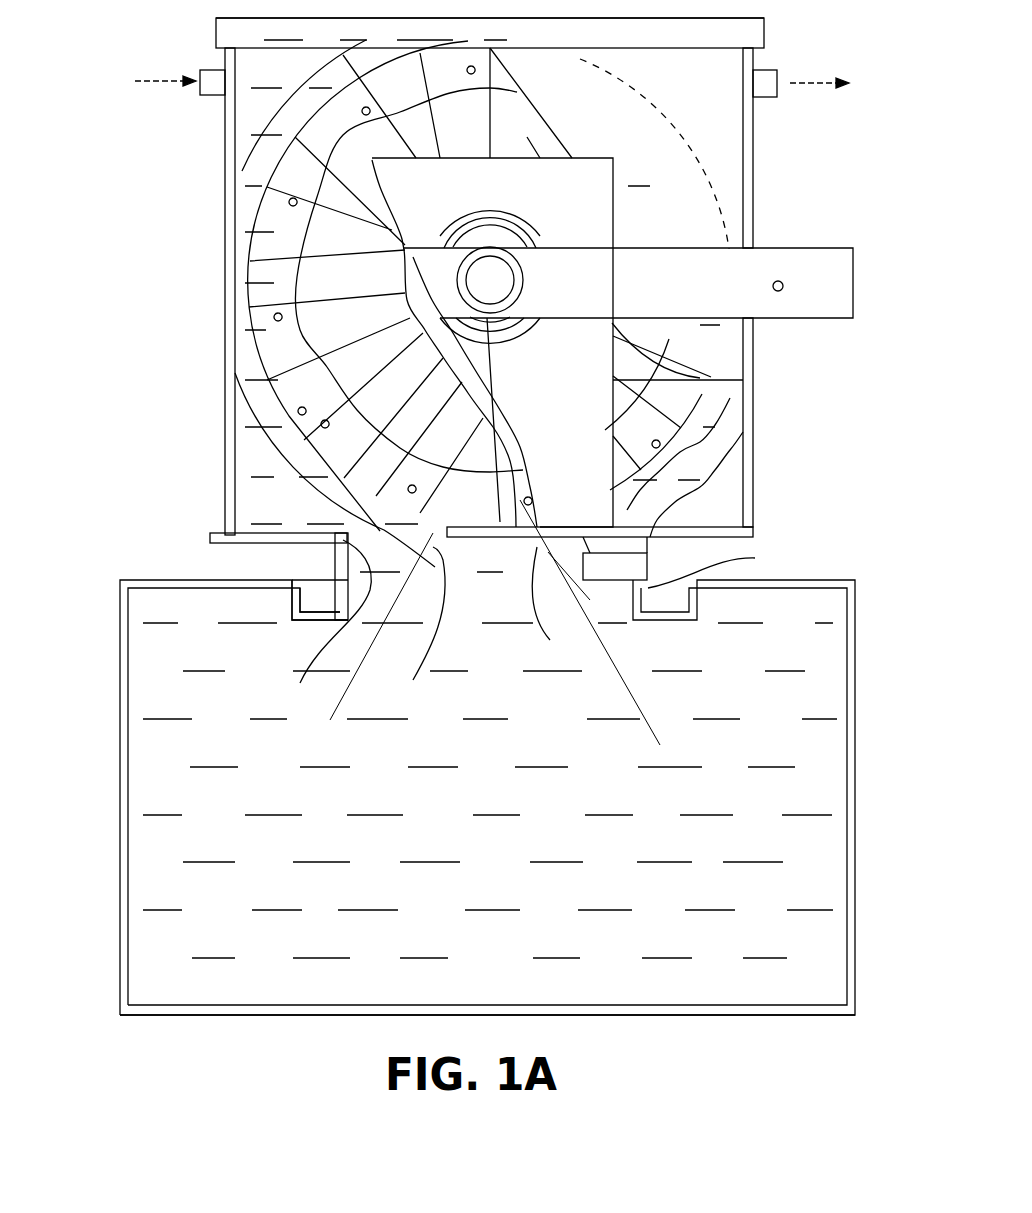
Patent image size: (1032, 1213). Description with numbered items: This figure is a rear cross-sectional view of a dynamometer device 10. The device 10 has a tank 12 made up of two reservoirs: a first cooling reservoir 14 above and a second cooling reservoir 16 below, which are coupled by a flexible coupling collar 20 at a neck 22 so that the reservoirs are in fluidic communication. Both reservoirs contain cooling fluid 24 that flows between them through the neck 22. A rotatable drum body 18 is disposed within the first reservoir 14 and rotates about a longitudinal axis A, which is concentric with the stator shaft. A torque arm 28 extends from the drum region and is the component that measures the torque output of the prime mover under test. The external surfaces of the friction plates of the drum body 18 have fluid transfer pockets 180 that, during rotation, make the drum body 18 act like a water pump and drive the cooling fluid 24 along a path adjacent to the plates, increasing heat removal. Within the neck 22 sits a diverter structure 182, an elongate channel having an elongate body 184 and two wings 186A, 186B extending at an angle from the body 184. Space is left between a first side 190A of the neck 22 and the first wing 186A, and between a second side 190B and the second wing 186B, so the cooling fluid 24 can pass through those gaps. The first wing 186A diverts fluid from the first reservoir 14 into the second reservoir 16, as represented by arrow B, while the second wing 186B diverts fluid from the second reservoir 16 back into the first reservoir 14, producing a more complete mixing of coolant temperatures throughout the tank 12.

The dynamometer device 10 is at (100, 212).
The tank 12 is at (138, 437).
The first cooling reservoir 14 is at (228, 362).
The second cooling reservoir 16 is at (120, 806).
The rotatable drum body 18 is at (253, 227).
The fluid transfer pockets 180 is at (275, 330).
The diverter structure 182 is at (487, 552).
The elongate body 184 is at (473, 530).
The first wing 186A is at (416, 626).
The second wing 186B is at (547, 609).
The first side of the neck 190A is at (323, 628).
The second side of the neck 190B is at (732, 568).
The flexible coupling collar 20 is at (333, 577).
The neck 22 is at (305, 566).
The cooling fluid 24 is at (250, 453).
The torque arm 28 is at (764, 320).
The longitudinal axis A is at (487, 285).
The arrow B is at (352, 697).